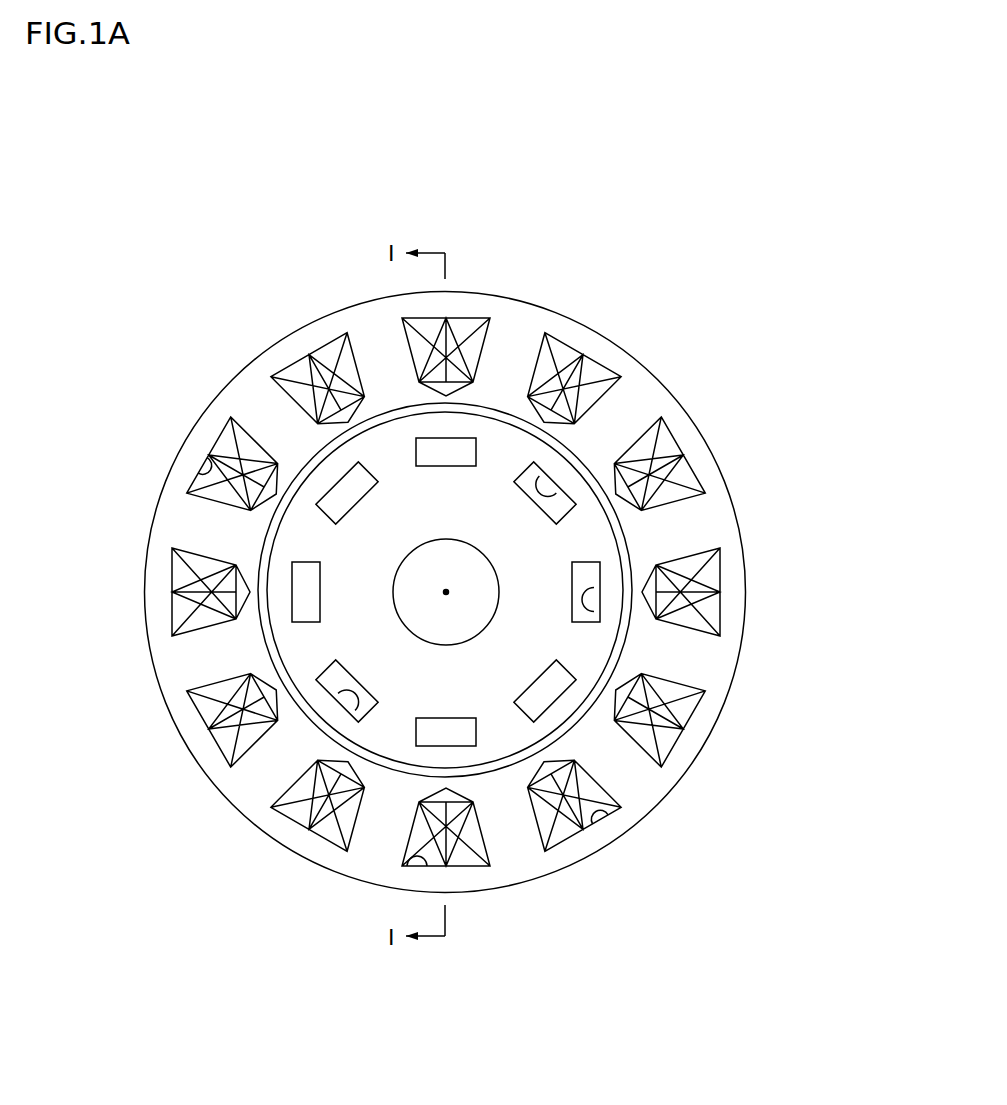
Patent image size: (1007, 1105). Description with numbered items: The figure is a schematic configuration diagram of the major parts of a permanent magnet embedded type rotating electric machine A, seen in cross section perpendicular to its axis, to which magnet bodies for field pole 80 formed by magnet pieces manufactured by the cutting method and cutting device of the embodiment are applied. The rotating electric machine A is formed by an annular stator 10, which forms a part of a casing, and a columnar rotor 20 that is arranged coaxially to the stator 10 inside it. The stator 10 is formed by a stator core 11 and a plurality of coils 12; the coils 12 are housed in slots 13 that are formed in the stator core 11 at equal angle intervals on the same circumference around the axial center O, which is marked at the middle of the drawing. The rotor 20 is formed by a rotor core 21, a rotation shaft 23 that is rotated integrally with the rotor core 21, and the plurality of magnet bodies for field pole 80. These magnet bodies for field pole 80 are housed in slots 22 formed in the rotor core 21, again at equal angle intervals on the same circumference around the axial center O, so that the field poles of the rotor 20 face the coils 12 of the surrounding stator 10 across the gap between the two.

The rotating electric machine A is at (252, 358).
The stator 10 is at (646, 830).
The stator core 11 is at (297, 347).
The coils 12 is at (227, 440).
The slots 13 is at (203, 460).
The rotor 20 is at (268, 545).
The rotor core 21 is at (497, 440).
The slots 22 is at (558, 500).
The rotation shaft 23 is at (437, 622).
The magnet bodies for field pole 80 is at (556, 492).
The axial center O is at (446, 590).